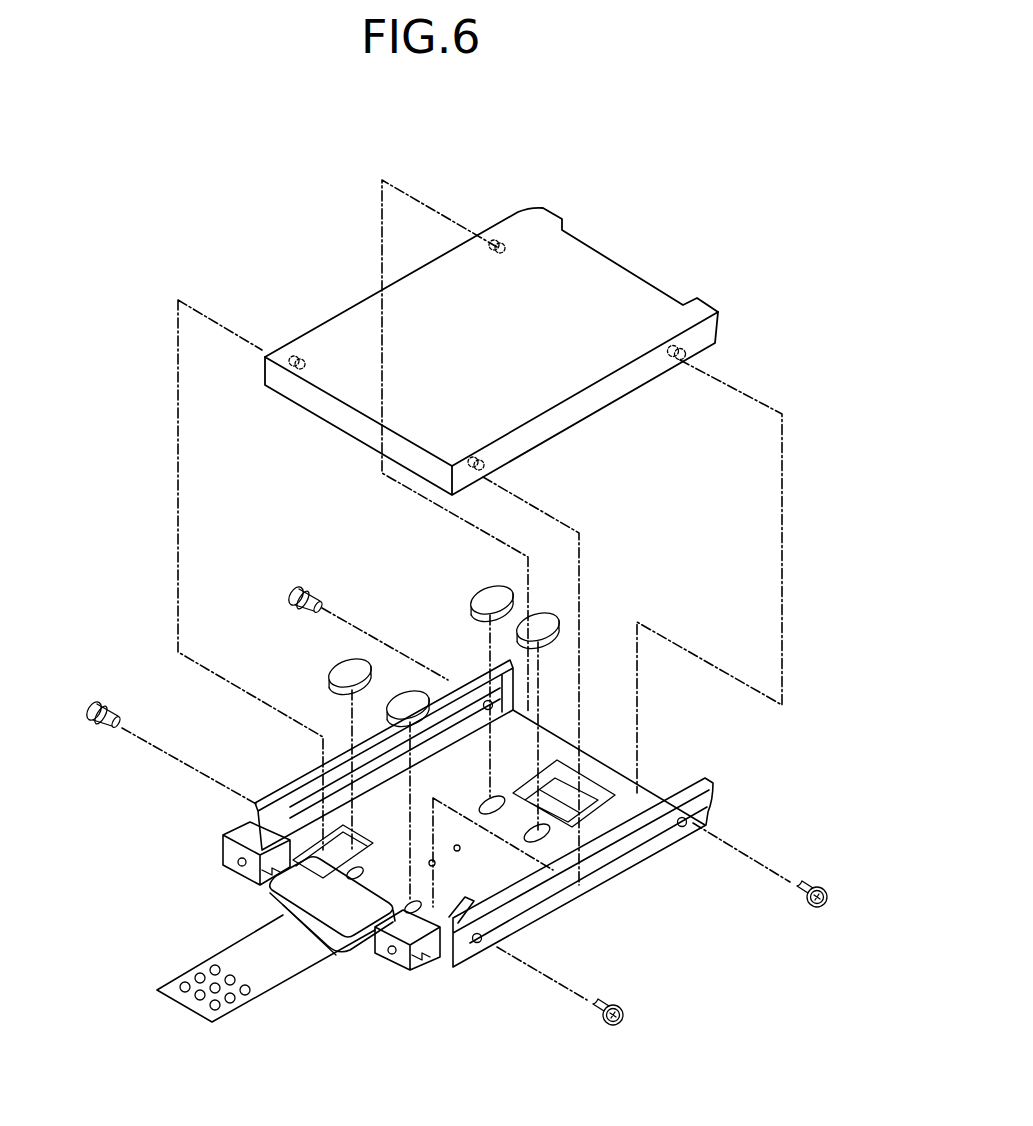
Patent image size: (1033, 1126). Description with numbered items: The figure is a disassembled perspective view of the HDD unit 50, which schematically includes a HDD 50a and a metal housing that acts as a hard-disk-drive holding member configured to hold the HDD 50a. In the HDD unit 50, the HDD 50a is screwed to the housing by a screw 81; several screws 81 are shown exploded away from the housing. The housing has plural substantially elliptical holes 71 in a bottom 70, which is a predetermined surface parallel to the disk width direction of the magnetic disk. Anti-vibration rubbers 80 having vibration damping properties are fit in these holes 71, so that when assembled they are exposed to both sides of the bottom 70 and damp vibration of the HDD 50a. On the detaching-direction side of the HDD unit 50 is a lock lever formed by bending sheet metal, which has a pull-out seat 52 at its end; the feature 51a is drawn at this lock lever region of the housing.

The HDD unit 50 is at (491, 317).
The HDD 50a is at (643, 308).
The bottom 70 is at (487, 873).
The holes 71 is at (497, 805).
The anti-vibration rubbers 80 is at (400, 703).
The screw 81 is at (290, 596).
The pull-out seat 52 is at (257, 996).
The connector tab 51a is at (468, 958).